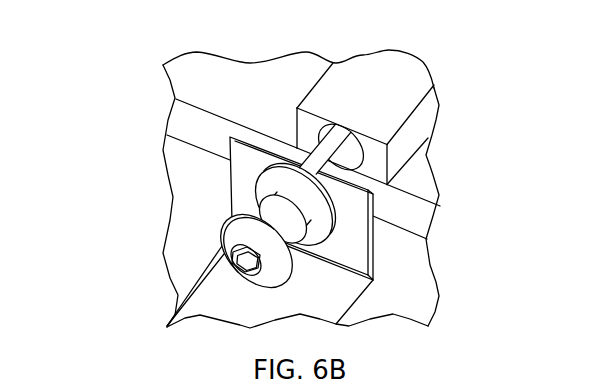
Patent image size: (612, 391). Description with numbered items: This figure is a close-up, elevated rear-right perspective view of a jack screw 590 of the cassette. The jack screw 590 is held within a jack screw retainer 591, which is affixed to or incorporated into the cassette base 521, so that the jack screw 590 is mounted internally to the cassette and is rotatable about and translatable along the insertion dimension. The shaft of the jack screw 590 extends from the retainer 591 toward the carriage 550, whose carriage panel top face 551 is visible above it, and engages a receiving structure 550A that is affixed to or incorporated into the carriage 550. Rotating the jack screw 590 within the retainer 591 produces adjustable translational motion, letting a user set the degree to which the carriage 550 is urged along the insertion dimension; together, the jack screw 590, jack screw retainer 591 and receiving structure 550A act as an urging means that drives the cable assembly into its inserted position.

The cassette base 521 is at (183, 268).
The carriage 550 is at (434, 81).
The receiving structure 550A is at (364, 155).
The carriage panel top face 551 is at (193, 81).
The jack screw 590 is at (232, 237).
The jack screw retainer 591 is at (341, 228).